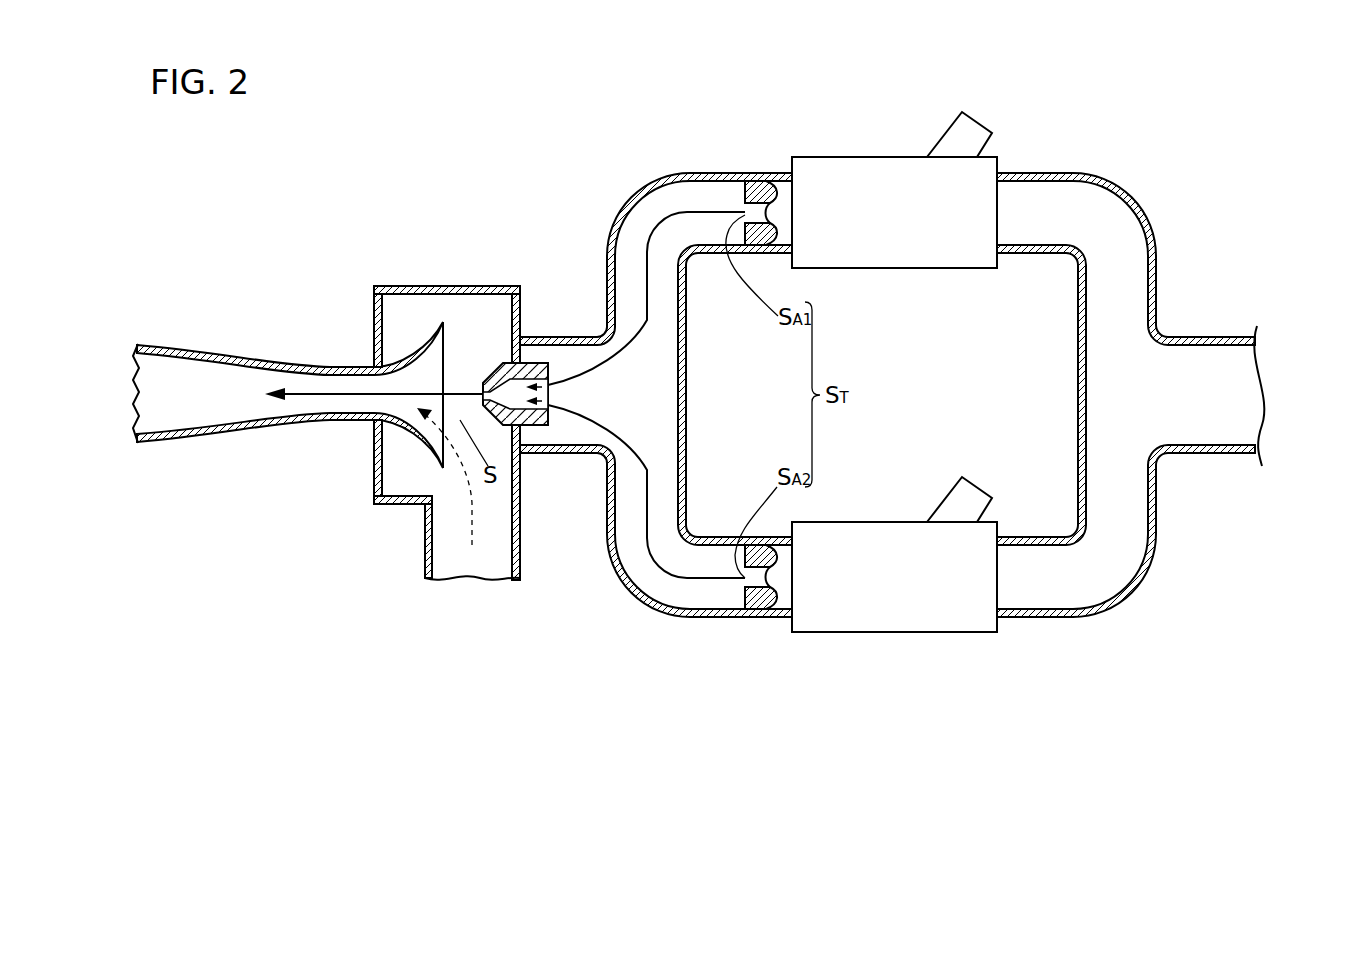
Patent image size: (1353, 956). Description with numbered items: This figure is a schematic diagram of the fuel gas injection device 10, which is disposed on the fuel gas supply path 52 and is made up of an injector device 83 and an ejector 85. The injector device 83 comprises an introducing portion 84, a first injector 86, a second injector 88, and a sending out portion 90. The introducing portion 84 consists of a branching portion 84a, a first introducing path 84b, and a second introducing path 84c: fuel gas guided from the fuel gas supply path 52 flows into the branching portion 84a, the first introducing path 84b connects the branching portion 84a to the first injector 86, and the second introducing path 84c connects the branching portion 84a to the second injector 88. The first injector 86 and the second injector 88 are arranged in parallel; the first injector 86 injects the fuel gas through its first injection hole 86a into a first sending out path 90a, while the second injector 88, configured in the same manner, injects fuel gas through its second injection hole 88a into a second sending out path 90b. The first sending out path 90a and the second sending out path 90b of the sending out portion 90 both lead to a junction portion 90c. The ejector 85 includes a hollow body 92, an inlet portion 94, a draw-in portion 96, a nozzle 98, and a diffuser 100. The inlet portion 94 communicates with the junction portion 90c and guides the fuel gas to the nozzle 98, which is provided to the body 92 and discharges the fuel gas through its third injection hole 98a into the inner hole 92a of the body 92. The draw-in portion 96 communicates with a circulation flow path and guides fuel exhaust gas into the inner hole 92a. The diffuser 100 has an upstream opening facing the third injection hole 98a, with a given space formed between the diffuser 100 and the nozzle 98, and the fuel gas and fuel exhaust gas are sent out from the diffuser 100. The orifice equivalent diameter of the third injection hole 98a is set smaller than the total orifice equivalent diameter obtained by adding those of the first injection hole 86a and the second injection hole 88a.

The fuel gas injection device 10 is at (537, 177).
The fuel gas supply path 52 is at (1200, 370).
The injector device 83 is at (572, 222).
The introducing portion 84 is at (1085, 164).
The branching portion 84a is at (1100, 400).
The first introducing path 84b is at (1020, 208).
The second introducing path 84c is at (1020, 582).
The ejector 85 is at (465, 249).
The first injector 86 is at (813, 157).
The first injection hole 86a is at (748, 205).
The second injector 88 is at (812, 633).
The second injection hole 88a is at (742, 613).
The sending out portion 90 is at (648, 183).
The first sending out path 90a is at (693, 198).
The second sending out path 90b is at (695, 592).
The junction portion 90c is at (653, 397).
The body 92 is at (412, 287).
The inner hole 92a is at (403, 307).
The inlet portion 94 is at (562, 432).
The draw-in portion 96 is at (440, 543).
The nozzle 98 is at (527, 363).
The third injection hole 98a is at (483, 394).
The diffuser 100 is at (172, 347).